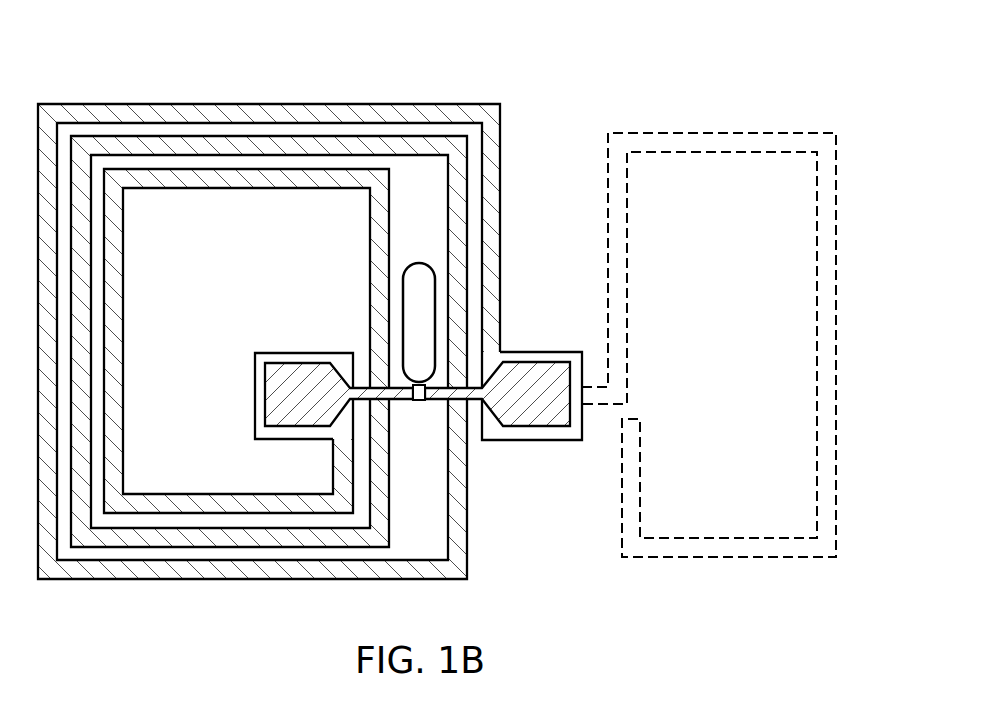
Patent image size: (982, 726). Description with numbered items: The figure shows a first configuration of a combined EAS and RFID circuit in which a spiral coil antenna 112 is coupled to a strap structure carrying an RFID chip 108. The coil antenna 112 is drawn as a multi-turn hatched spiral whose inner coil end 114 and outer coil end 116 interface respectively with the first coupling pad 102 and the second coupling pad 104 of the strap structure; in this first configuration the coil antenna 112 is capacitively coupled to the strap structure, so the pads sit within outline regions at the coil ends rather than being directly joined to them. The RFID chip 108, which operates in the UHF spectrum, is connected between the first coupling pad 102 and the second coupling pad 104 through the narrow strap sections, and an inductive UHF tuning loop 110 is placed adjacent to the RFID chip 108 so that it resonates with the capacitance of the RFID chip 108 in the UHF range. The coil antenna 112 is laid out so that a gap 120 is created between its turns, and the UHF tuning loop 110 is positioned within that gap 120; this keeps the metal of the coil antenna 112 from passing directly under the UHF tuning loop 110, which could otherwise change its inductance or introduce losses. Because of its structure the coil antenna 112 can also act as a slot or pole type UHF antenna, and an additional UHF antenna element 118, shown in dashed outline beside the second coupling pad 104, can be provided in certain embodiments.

The first coupling pad 102 is at (292, 362).
The second coupling pad 104 is at (529, 362).
The RFID chip 108 is at (419, 401).
The UHF tuning loop 110 is at (419, 263).
The coil antenna 112 is at (100, 104).
The inner coil end 114 is at (255, 392).
The outer coil end 116 is at (538, 440).
The additional UHF antenna element 118 is at (836, 344).
The gap 120 is at (437, 504).